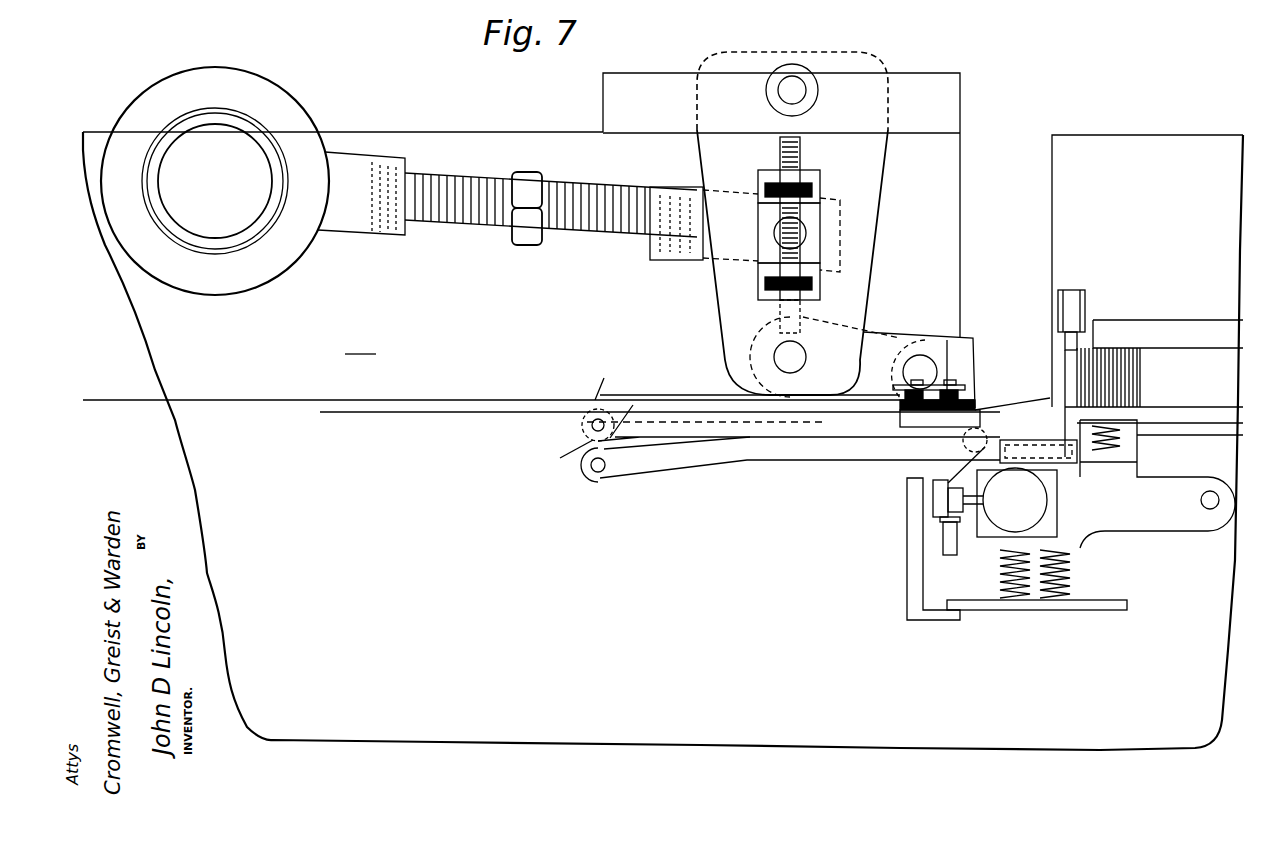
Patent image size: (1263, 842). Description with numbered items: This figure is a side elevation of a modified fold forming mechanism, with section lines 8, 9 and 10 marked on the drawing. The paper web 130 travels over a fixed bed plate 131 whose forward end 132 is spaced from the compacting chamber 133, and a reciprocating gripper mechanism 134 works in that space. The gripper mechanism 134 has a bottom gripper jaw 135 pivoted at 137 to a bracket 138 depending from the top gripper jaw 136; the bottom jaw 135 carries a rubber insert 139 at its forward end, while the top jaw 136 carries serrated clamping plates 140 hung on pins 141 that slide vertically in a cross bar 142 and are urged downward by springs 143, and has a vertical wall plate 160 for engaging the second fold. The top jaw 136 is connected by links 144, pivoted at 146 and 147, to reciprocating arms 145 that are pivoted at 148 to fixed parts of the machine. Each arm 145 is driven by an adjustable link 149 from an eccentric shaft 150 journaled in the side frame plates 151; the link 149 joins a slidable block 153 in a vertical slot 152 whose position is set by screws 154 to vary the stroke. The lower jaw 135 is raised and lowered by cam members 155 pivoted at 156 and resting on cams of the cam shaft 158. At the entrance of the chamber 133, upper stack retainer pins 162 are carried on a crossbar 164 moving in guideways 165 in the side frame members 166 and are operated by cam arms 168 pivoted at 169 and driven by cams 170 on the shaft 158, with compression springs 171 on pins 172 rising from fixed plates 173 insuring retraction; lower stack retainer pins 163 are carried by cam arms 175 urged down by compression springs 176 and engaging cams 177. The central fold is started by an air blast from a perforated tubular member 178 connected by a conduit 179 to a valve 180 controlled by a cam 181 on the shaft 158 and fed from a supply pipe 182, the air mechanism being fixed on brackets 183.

The section line 8- 8 is at (819, 293).
The section line 9- 9 is at (1060, 363).
The section line 10- 10 is at (985, 365).
The paper web 130 is at (238, 403).
The bed plate 131 is at (375, 413).
The forward end of bed plate 132 is at (823, 423).
The compacting chamber 133 is at (1154, 388).
The reciprocating gripper mechanism 134 is at (976, 356).
The bottom gripper jaw 135 is at (880, 436).
The top gripper jaw 136 is at (958, 335).
The pivot 137 is at (561, 459).
The bracket 138 is at (593, 426).
The rubber insert 139 is at (900, 418).
The serrated clamping plates 140 is at (968, 388).
The pins 141 is at (945, 380).
The cross bar 142 is at (900, 368).
The springs 143 is at (895, 387).
The links 144 is at (869, 340).
The reciprocating arms 145 is at (865, 232).
The pivot 146 is at (913, 380).
The pivot 147 is at (773, 357).
The pivot 148 is at (788, 90).
The adjustable link 149 is at (453, 187).
The eccentric shaft 150 is at (218, 142).
The side frame plates 151 is at (360, 343).
The vertical slots 152 is at (818, 180).
The slidable blocks 153 is at (813, 213).
The screws 154 is at (780, 178).
The cam members 155 is at (723, 458).
The pivot 156 is at (597, 470).
The cam shaft 158 is at (1015, 512).
The wall plate 160 is at (950, 345).
The upper stack retainer pins 162 is at (1067, 340).
The lower stack retainer pins 163 is at (1065, 413).
The crossbar 164 is at (1072, 295).
The guideways 165 is at (1072, 313).
The side frame members 166 is at (1107, 146).
The cam arms 168 is at (1155, 513).
The pivot 169 is at (1210, 510).
The cams 170 is at (1043, 533).
The compression springs 171 is at (1065, 572).
The pins 172 is at (1055, 596).
The fixed plates 173 is at (1130, 606).
The cam arms 175 is at (1113, 458).
The compression springs 176 is at (1127, 442).
The cams 177 is at (933, 490).
The perforated tubular member 178 is at (983, 436).
The conduit 179 is at (962, 475).
The valve 180 is at (933, 507).
The cam 181 is at (987, 520).
The supply pipe 182 is at (942, 532).
The brackets 183 is at (912, 573).